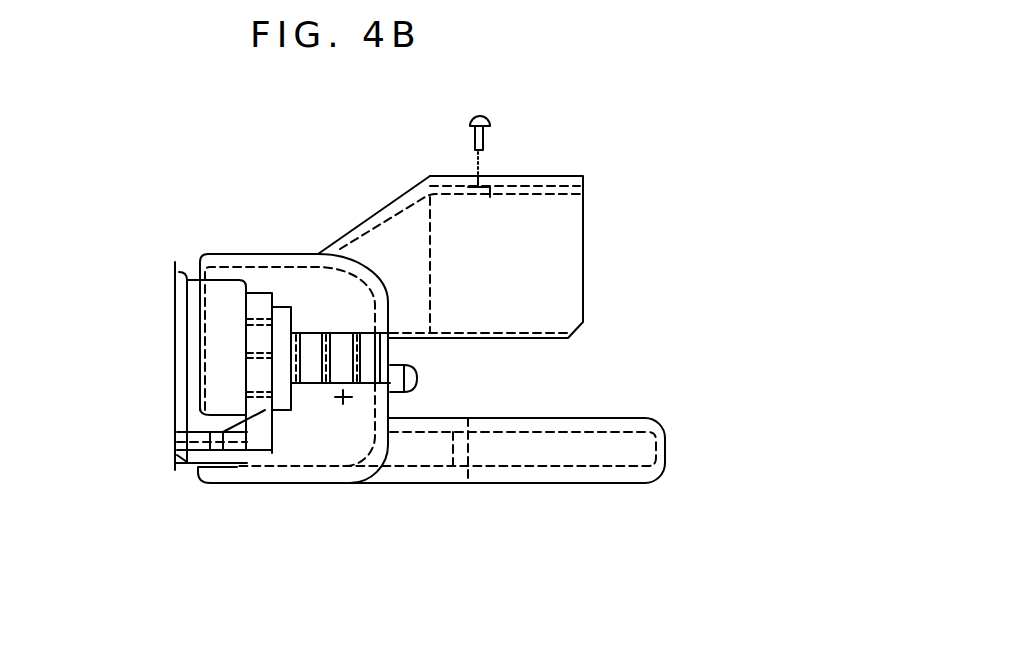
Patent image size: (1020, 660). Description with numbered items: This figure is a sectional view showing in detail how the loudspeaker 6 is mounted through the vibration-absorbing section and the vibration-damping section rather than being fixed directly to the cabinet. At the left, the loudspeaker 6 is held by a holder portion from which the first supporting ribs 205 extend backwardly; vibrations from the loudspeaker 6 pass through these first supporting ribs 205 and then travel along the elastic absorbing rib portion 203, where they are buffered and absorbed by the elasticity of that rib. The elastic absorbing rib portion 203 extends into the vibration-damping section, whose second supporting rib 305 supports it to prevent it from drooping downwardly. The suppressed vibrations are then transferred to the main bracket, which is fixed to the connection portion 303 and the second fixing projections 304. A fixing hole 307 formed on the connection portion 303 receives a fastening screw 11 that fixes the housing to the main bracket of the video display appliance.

The loudspeaker 6 is at (218, 357).
The fastening screw 11 is at (490, 122).
The elastic absorbing rib portion 203 is at (340, 383).
The first supporting ribs 205 is at (257, 453).
The connection portion 303 is at (560, 258).
The second fixing projections 304 is at (417, 378).
The second supporting rib 305 is at (343, 402).
The fixing hole 307 is at (480, 185).